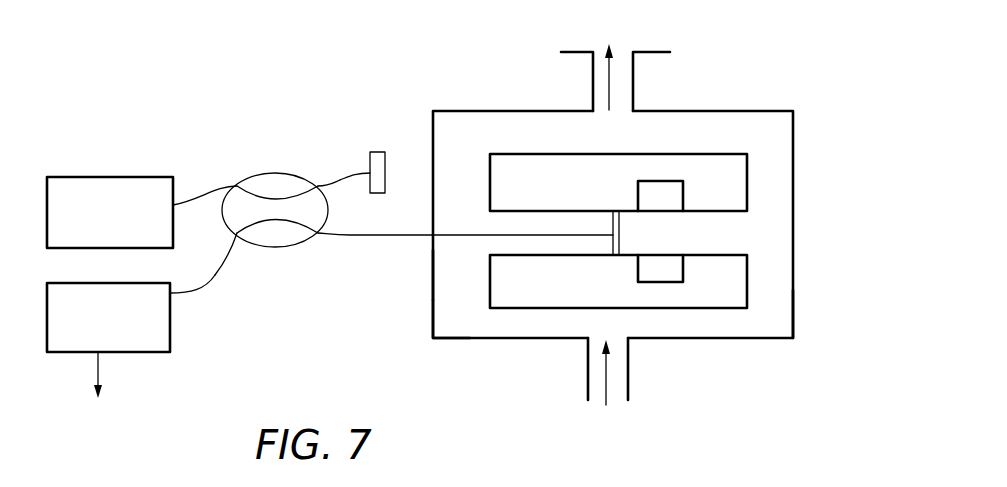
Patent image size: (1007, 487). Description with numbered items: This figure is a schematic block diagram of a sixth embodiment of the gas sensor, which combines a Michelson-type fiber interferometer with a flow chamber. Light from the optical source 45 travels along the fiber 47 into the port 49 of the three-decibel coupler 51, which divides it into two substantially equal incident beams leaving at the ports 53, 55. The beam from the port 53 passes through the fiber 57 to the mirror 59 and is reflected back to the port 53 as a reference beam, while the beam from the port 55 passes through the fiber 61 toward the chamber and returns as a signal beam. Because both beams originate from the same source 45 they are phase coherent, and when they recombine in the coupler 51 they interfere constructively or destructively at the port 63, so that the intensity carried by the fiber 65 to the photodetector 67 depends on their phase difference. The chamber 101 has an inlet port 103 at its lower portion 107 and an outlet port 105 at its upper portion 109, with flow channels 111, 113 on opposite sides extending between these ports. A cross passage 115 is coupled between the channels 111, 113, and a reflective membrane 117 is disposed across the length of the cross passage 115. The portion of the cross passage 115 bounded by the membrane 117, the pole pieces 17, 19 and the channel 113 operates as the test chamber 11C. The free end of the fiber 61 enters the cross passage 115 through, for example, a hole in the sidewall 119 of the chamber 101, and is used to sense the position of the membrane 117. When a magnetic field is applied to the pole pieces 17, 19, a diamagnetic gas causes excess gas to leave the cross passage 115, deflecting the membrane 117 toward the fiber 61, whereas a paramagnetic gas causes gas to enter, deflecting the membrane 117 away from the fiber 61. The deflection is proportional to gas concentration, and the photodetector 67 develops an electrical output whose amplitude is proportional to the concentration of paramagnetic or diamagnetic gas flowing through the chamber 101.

The optical source 45 is at (106, 177).
The optical fiber 47 is at (197, 197).
The port 49 is at (237, 186).
The 3 dB coupler 51 is at (291, 140).
The port 53 is at (322, 188).
The port 55 is at (318, 235).
The fiber 57 is at (342, 177).
The mirror 59 is at (386, 170).
The fiber 61 is at (386, 235).
The port 63 is at (192, 261).
The fiber 65 is at (222, 278).
The photodetector 67 is at (122, 283).
The chamber 101 is at (762, 83).
The inlet port 103 is at (588, 368).
The outlet port 105 is at (593, 85).
The lower portion 107 is at (644, 372).
The upper portion 109 is at (665, 84).
The flow channel 111 is at (436, 282).
The flow channel 113 is at (784, 318).
The cross passage 115 is at (560, 220).
The reflective membrane 117 is at (620, 237).
The sidewall 119 is at (432, 322).
The pole piece 17 is at (683, 197).
The pole piece 19 is at (684, 272).
The test chamber 11C is at (730, 239).